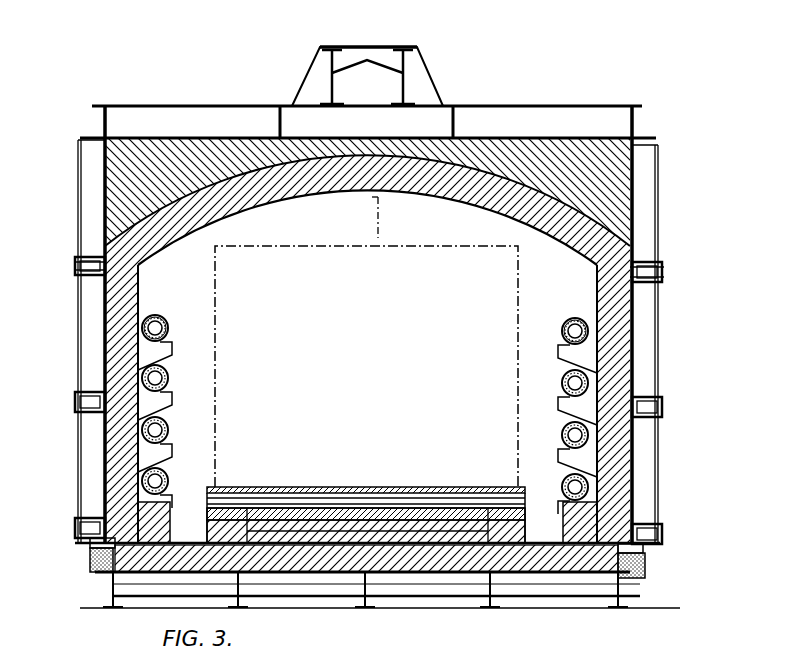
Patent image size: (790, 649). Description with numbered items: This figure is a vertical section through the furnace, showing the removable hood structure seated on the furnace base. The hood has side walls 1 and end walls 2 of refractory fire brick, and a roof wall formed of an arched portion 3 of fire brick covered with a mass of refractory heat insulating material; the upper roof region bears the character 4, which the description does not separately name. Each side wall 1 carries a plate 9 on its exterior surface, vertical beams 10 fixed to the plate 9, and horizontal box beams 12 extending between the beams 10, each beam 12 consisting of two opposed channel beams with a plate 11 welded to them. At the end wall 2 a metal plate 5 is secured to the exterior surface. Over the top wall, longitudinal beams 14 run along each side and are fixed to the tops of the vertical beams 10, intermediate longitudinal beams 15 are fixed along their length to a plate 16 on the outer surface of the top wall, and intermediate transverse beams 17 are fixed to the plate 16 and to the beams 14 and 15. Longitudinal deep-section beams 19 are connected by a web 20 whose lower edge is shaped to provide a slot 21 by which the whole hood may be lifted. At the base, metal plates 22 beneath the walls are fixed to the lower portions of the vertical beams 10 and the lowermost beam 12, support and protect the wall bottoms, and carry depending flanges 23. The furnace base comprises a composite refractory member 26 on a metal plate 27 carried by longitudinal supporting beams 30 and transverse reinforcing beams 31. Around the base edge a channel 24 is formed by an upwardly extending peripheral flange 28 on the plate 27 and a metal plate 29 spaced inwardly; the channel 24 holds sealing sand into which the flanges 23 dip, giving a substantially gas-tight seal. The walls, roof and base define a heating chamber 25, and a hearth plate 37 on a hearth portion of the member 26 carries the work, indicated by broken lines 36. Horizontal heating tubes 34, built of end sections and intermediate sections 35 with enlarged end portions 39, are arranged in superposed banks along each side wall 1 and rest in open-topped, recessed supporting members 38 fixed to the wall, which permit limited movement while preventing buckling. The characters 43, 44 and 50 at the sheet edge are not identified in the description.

The side wall 1 is at (148, 262).
The end wall 2 is at (530, 250).
The arched portion 3 is at (348, 170).
The roof insulation 4 is at (592, 145).
The metal plate 5 is at (525, 642).
The plate 9 is at (104, 172).
The vertical beam 10 is at (80, 205).
The plate 11 is at (74, 266).
The beam 12 is at (77, 257).
The longitudinal beam 14 is at (103, 118).
The intermediate longitudinal beam 15 is at (276, 123).
The plate 16 is at (150, 137).
The intermediate transverse beam 17 is at (142, 106).
The longitudinal deep-section beam 19 is at (324, 60).
The web 20 is at (378, 50).
The slot 21 is at (350, 83).
The metal plate 22 is at (78, 532).
The depending flange 23 is at (82, 545).
The channel 24 is at (100, 578).
The heating chamber 25 is at (399, 217).
The composite member 26 is at (428, 530).
The metal plate 27 is at (134, 600).
The peripheral flange 28 is at (90, 560).
The metal plate 29 is at (602, 596).
The longitudinal supporting beam 30 is at (110, 608).
The transverse reinforcing beam 31 is at (310, 598).
The heating tube 34 is at (167, 320).
The intermediate tube section 35 is at (169, 330).
The broken lines 36 is at (314, 246).
The hearth plate 37 is at (285, 487).
The supporting member 38 is at (172, 345).
The enlarged portion 39 is at (158, 314).
The element (adjacent figure) 43 is at (704, 640).
The element (adjacent figure) 44 is at (590, 648).
The element (adjacent figure) 50 is at (751, 644).